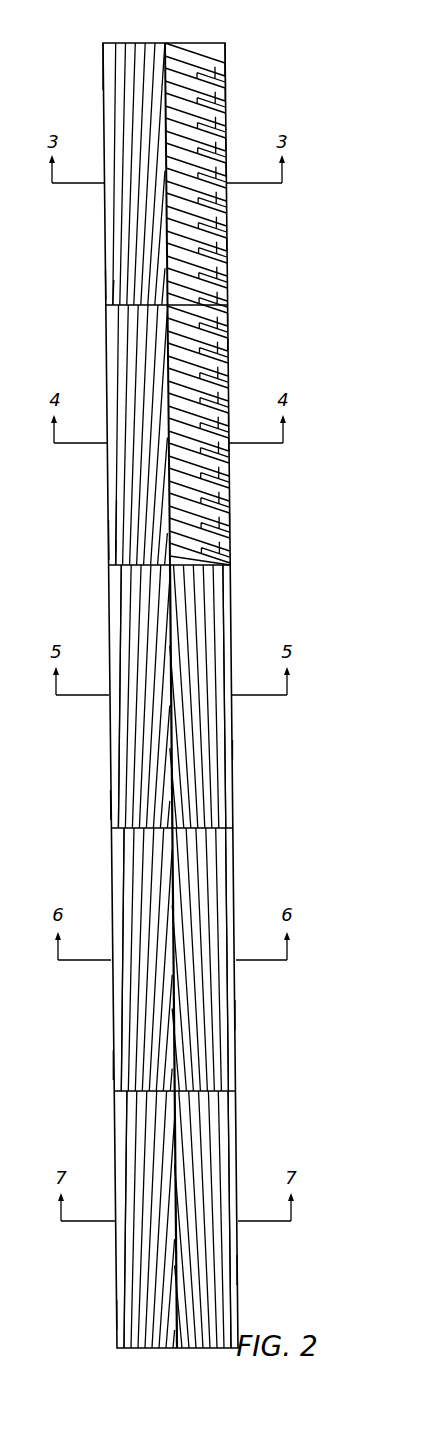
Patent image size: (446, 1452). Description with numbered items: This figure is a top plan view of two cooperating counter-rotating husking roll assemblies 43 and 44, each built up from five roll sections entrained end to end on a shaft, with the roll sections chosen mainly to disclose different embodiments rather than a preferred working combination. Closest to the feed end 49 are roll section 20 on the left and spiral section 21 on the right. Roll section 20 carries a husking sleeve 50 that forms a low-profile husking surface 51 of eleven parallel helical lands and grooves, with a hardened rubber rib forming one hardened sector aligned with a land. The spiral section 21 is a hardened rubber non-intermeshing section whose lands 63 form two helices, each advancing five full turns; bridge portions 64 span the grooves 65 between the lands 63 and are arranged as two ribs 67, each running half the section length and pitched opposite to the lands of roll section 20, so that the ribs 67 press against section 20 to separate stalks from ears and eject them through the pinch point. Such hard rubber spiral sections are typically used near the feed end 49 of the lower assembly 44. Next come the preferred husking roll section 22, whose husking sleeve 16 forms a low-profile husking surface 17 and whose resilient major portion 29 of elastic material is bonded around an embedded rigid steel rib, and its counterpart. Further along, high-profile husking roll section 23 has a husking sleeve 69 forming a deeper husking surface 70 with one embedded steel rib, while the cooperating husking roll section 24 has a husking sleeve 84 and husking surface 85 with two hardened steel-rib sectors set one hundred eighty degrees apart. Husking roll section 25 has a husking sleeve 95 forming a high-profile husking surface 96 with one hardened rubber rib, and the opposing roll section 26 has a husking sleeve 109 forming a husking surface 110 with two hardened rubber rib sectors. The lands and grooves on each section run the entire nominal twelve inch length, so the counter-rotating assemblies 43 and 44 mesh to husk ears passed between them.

The husking sleeve 16 is at (112, 548).
The husking surface 17 is at (110, 532).
The roll section 20 is at (103, 210).
The spiral section 21 is at (225, 104).
The husking roll section 22 is at (107, 470).
The husking roll section 23 is at (109, 728).
The husking roll section 24 is at (233, 778).
The husking roll section 25 is at (111, 995).
The roll section 26 is at (235, 1043).
The resilient major portion 29 is at (112, 516).
The roll assembly 43 is at (102, 74).
The roll assembly 44 is at (228, 74).
The feed end 49 is at (164, 43).
The husking sleeve 50 is at (110, 293).
The husking surface 51 is at (106, 276).
The lands 63 is at (228, 211).
The bridge portions 64 is at (222, 220).
The grooves 65 is at (227, 250).
The ribs 67 is at (222, 84).
The husking sleeve 69 is at (118, 783).
The husking surface 70 is at (110, 795).
The husking sleeve 84 is at (228, 728).
The husking surface 85 is at (232, 748).
The husking sleeve 95 is at (122, 1045).
The husking surface 96 is at (114, 1057).
The husking sleeve 109 is at (228, 992).
The husking surface 110 is at (233, 1012).